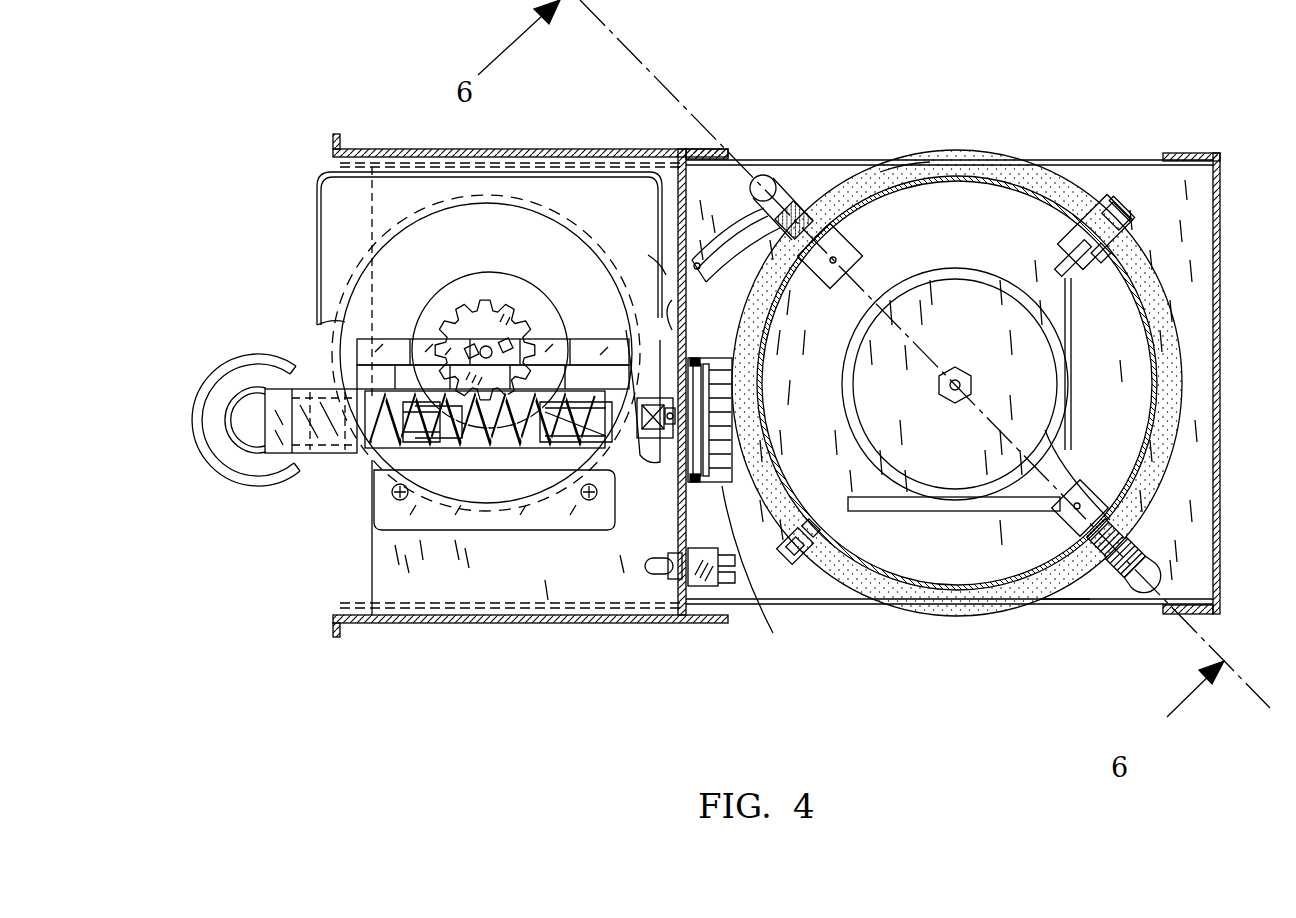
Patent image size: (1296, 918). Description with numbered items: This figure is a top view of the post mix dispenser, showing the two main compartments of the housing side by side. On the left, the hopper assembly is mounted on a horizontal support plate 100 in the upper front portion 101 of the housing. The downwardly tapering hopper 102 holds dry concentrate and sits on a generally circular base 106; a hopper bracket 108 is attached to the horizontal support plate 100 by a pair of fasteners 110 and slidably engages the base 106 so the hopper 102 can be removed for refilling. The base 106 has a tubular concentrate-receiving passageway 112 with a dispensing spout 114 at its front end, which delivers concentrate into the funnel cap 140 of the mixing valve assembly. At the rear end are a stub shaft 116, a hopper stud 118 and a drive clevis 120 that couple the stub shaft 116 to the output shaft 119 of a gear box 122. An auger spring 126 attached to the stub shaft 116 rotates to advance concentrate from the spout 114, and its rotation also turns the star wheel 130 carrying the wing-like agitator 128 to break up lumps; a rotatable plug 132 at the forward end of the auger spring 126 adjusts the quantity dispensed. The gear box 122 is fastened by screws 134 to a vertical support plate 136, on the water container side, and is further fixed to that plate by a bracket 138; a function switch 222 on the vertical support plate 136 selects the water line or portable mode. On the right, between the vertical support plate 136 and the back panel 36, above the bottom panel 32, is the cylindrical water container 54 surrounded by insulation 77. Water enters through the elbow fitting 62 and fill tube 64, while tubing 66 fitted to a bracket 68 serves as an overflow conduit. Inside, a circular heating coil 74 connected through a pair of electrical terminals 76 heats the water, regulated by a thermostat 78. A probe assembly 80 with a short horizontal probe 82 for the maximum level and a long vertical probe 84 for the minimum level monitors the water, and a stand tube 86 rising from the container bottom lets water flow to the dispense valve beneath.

The horizontal support plate 100 is at (372, 598).
The upper front portion 101 is at (500, 150).
The hopper 102 is at (317, 215).
The base 106 is at (341, 352).
The hopper bracket 108 is at (374, 518).
The fasteners 110 is at (398, 500).
The concentrate-receiving passageway 112 is at (345, 442).
The dispensing spout 114 is at (248, 432).
The stub shaft 116 is at (595, 400).
The hopper stud 118 is at (640, 330).
The output shaft 119 is at (668, 440).
The drive clevis 120 is at (645, 468).
The gear box 122 is at (708, 446).
The auger spring 126 is at (512, 428).
The dry concentrate agitator 128 is at (565, 340).
The star wheel 130 is at (488, 300).
The rotatable plug 132 is at (428, 400).
The screws 134 is at (672, 305).
The vertical support plate 136 is at (664, 242).
The bracket 138 is at (790, 580).
The funnel cap 140 is at (232, 372).
The function switch 222 is at (655, 570).
The back panel 36 is at (1220, 352).
The bottom panel 32 is at (1067, 604).
The container 54 is at (1002, 160).
The elbow fitting 62 is at (1142, 590).
The fill tube 64 is at (954, 504).
The tubing 66 is at (748, 185).
The bracket 68 is at (855, 250).
The heating coil 74 is at (933, 275).
The electrical terminals 76 is at (1105, 215).
The insulation 77 is at (895, 165).
The thermostat 78 is at (800, 565).
The probe assembly 80 is at (1097, 262).
The short horizontal probe 82 is at (1072, 318).
The long vertical probe 84 is at (1062, 252).
The stand tube 86 is at (946, 386).